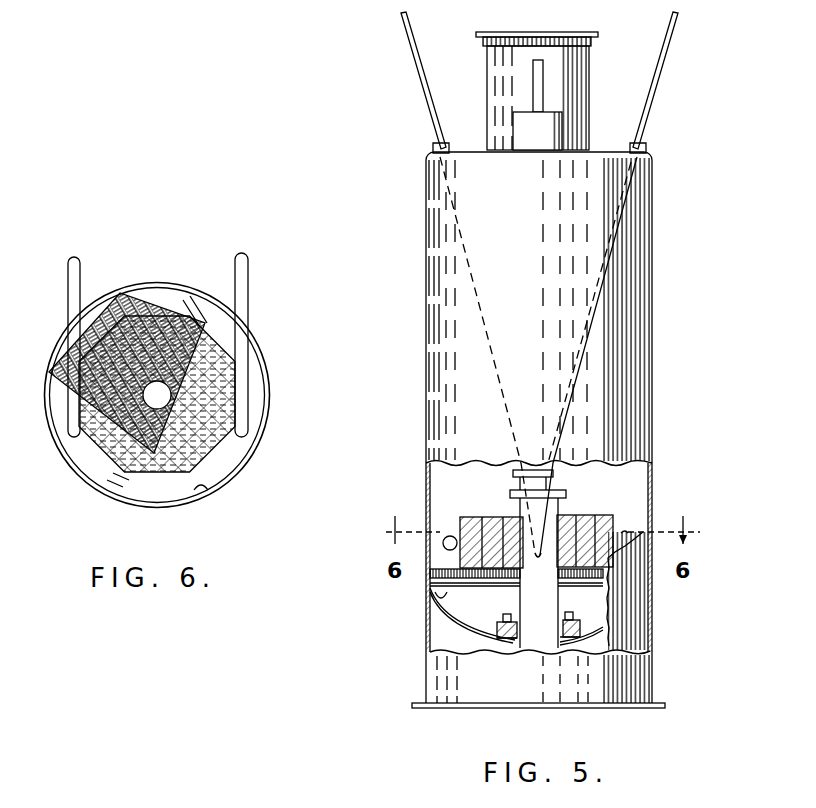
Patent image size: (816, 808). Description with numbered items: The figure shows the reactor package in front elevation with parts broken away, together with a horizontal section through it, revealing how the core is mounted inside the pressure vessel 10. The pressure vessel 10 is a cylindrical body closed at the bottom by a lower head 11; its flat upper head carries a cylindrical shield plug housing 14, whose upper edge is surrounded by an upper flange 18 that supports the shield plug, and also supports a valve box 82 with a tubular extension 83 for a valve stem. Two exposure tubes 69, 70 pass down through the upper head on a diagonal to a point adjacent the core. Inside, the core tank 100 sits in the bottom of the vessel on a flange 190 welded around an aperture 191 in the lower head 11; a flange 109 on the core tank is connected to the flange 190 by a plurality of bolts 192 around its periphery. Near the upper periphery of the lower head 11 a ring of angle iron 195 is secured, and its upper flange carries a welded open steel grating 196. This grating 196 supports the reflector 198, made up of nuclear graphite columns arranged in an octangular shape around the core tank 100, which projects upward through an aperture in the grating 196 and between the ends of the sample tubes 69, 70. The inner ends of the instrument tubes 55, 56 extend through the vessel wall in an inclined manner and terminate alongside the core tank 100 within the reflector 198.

In FIG. 5, the pressure vessel 10 is at (655, 361).
In FIG. 5, the lower head 11 is at (453, 626).
In FIG. 5, the shield plug housing 14 is at (590, 73).
In FIG. 5, the upper flange 18 is at (592, 38).
In FIG. 5, the instrument tube 55 is at (450, 536).
In FIG. 6, the instrument tube 55 is at (72, 419).
In FIG. 5, the instrument tube 56 is at (624, 540).
In FIG. 6, the instrument tube 56 is at (249, 415).
In FIG. 5, the exposure tube 69 is at (431, 100).
In FIG. 5, the exposure tube 70 is at (657, 103).
In FIG. 5, the valve box 82 is at (557, 123).
In FIG. 5, the tubular extension 83 is at (538, 84).
In FIG. 5, the core tank 100 is at (549, 529).
In FIG. 6, the core tank 100 is at (169, 393).
In FIG. 5, the flange 109 is at (568, 613).
In FIG. 5, the flange 190 is at (497, 634).
In FIG. 5, the aperture 191 is at (502, 642).
In FIG. 5, the bolts 192 is at (505, 614).
In FIG. 5, the ring of angle iron 195 is at (444, 593).
In FIG. 6, the ring of angle iron 195 is at (208, 492).
In FIG. 5, the welded open steel grating 196 is at (430, 573).
In FIG. 6, the welded open steel grating 196 is at (150, 317).
In FIG. 5, the reflector 198 is at (468, 516).
In FIG. 6, the reflector 198 is at (213, 446).